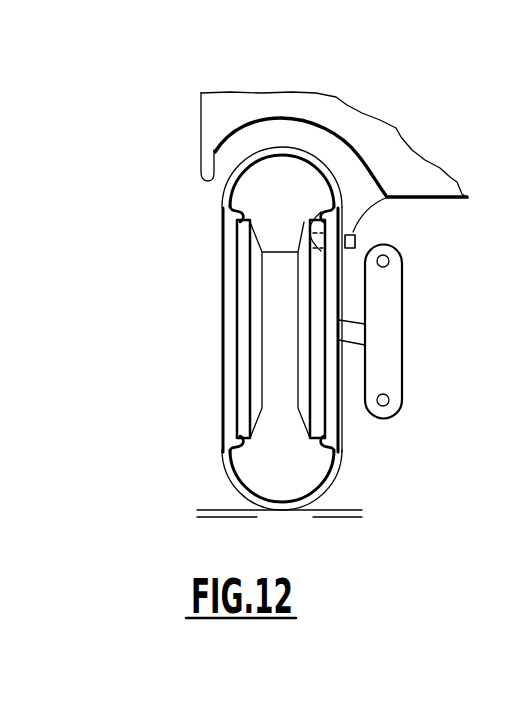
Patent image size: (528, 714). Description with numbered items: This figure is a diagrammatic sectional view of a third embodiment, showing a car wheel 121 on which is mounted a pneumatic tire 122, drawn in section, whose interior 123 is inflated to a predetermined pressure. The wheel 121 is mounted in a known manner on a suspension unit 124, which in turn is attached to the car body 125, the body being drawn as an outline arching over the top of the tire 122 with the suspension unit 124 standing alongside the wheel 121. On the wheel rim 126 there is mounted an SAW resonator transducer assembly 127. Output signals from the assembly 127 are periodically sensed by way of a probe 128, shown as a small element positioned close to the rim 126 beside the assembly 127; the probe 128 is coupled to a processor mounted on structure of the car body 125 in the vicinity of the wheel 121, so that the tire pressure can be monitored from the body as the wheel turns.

The car wheel 121 is at (336, 452).
The pneumatic tire 122 is at (224, 470).
The interior 123 is at (260, 168).
The suspension unit 124 is at (392, 398).
The car body 125 is at (320, 112).
The wheel rim 126 is at (318, 256).
The SAW resonator transducer assembly 127 is at (332, 204).
The probe 128 is at (357, 238).